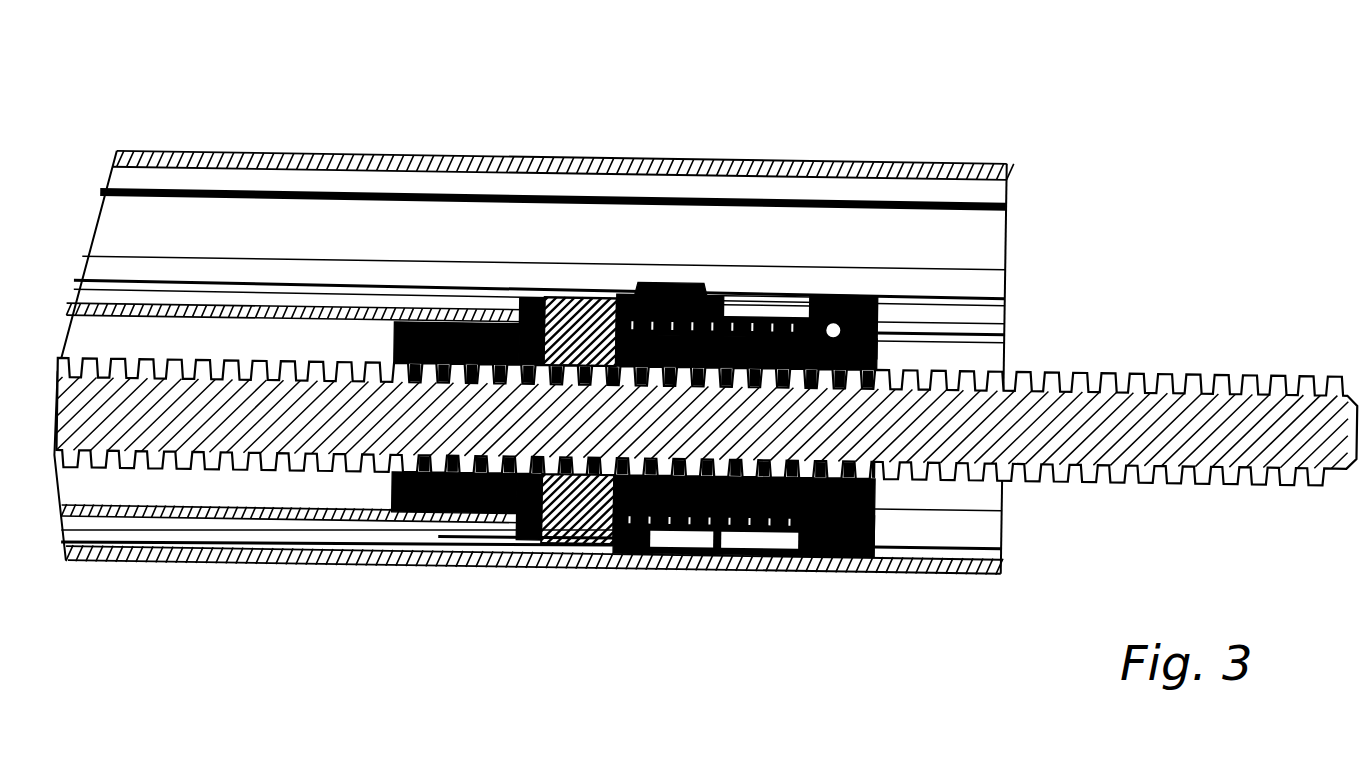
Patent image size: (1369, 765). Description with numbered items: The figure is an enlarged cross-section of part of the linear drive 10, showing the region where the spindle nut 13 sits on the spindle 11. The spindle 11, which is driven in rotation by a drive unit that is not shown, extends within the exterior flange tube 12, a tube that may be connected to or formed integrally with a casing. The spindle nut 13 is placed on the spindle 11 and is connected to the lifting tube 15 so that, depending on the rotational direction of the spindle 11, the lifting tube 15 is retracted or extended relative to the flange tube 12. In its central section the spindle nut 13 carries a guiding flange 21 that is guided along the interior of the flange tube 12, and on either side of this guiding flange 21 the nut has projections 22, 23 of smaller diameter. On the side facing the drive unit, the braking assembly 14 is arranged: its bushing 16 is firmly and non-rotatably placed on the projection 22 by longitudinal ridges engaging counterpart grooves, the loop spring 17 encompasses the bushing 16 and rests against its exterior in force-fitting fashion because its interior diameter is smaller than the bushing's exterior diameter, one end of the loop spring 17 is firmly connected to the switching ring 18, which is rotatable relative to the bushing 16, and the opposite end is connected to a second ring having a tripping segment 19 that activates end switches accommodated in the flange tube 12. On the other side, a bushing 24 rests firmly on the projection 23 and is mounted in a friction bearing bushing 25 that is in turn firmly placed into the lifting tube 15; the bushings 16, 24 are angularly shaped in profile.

The linear drive 10 is at (509, 140).
The spindle 11 is at (1193, 420).
The flange tube 12 is at (198, 563).
The spindle nut 13 is at (896, 365).
The braking assembly 14 is at (760, 317).
The lifting tube 15 is at (145, 520).
The bushing 16 is at (815, 560).
The loop spring 17 is at (800, 528).
The switching ring 18 is at (840, 295).
The tripping segment 19 is at (680, 283).
The guiding flange 21 is at (583, 298).
The projection 22 is at (672, 550).
The projection 23 is at (425, 527).
The bushing 24 is at (490, 540).
The friction bearing bushing 25 is at (440, 530).